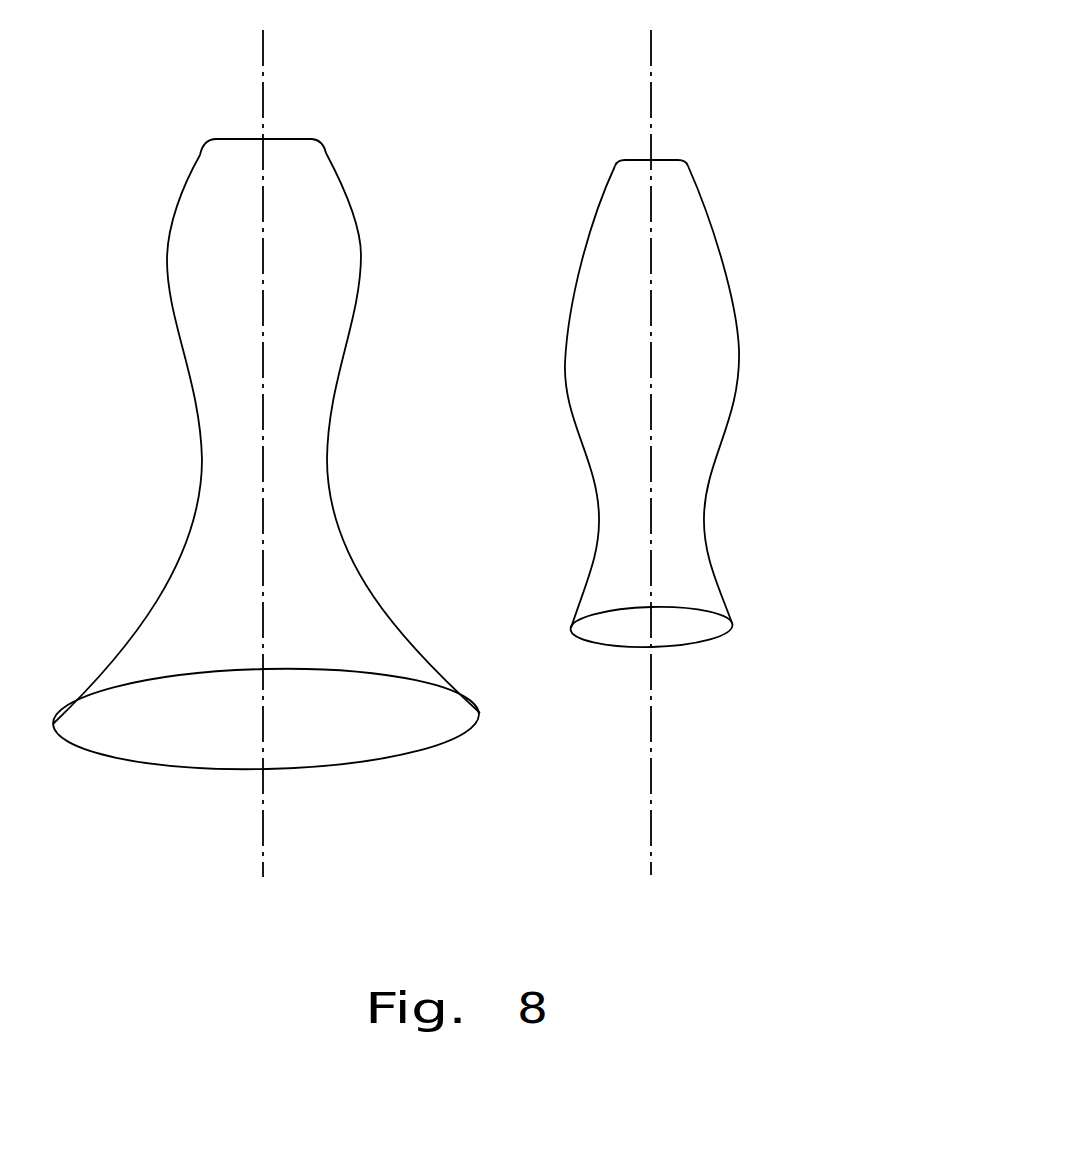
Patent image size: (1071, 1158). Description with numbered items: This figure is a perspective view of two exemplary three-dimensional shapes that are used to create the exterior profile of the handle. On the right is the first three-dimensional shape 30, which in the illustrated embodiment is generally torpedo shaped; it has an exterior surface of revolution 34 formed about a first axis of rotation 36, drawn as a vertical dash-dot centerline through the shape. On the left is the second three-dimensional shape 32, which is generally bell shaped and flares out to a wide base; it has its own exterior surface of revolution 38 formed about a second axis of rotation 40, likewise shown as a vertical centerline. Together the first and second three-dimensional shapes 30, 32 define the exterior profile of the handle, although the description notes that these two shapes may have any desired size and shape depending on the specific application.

The first three-dimensional shape 30 is at (694, 397).
The second three-dimensional shape 32 is at (266, 456).
The exterior surface of revolution 34 is at (732, 292).
The first axis of rotation 36 is at (652, 87).
The exterior surface of revolution 38 is at (352, 330).
The second axis of rotation 40 is at (263, 72).